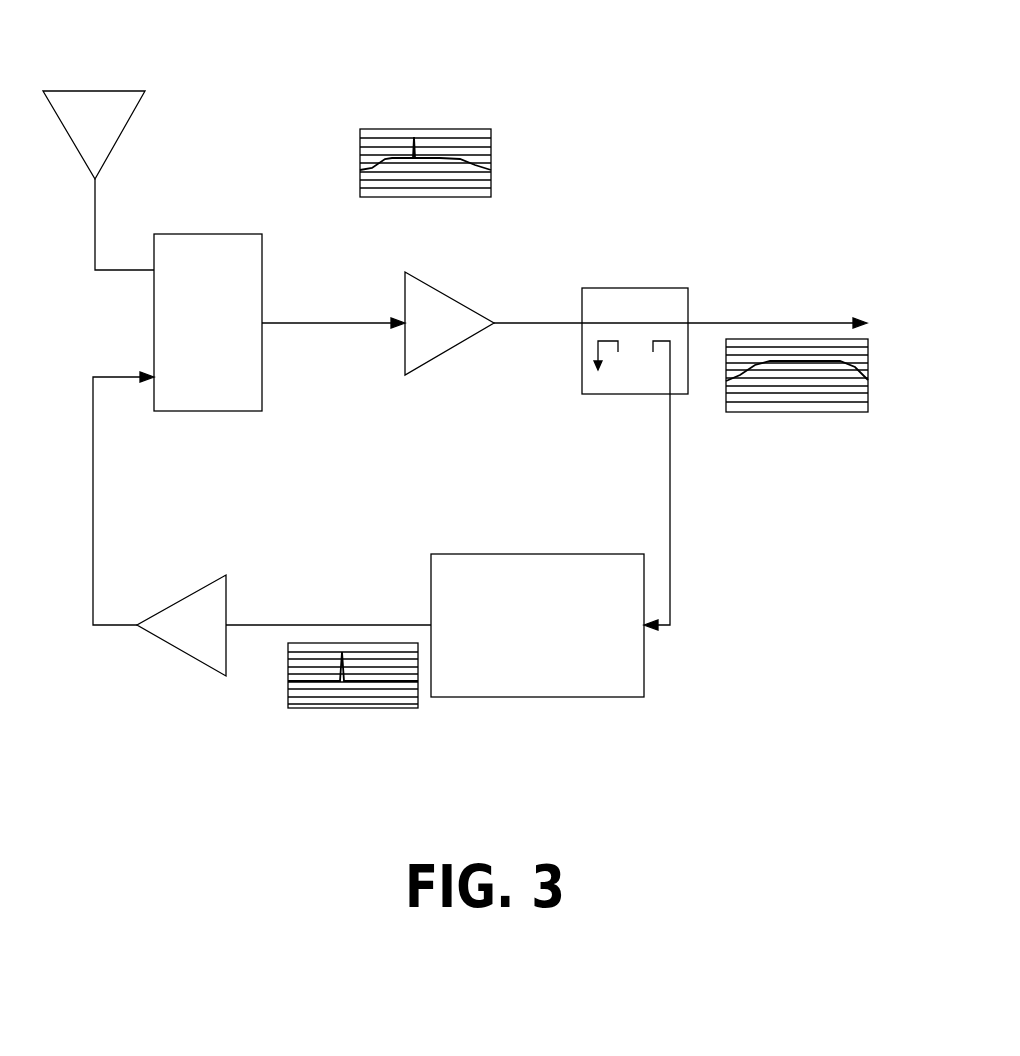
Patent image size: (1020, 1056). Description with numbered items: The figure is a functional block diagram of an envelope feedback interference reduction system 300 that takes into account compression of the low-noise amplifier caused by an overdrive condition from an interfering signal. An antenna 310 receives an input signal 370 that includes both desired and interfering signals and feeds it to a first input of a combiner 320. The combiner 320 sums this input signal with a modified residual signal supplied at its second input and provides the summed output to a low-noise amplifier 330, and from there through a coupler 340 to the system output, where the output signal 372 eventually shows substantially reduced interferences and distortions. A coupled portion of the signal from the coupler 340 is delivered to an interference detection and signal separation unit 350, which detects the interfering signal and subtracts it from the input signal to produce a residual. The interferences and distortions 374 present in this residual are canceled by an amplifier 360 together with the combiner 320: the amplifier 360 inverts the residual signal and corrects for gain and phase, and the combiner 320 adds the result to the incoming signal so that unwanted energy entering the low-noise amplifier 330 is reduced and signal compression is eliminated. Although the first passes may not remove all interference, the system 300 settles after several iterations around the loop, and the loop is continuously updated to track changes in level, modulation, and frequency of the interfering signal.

The envelope feedback interference reduction system 300 is at (480, 315).
The antenna 310 is at (155, 107).
The combiner 320 is at (242, 333).
The low-noise amplifier 330 is at (436, 414).
The coupler 340 is at (692, 317).
The interference detection and signal separation unit 350 is at (537, 602).
The amplifier 360 is at (204, 716).
The input signal 370 is at (433, 139).
The output signal 372 is at (782, 404).
The interferences and distortions 374 is at (366, 704).